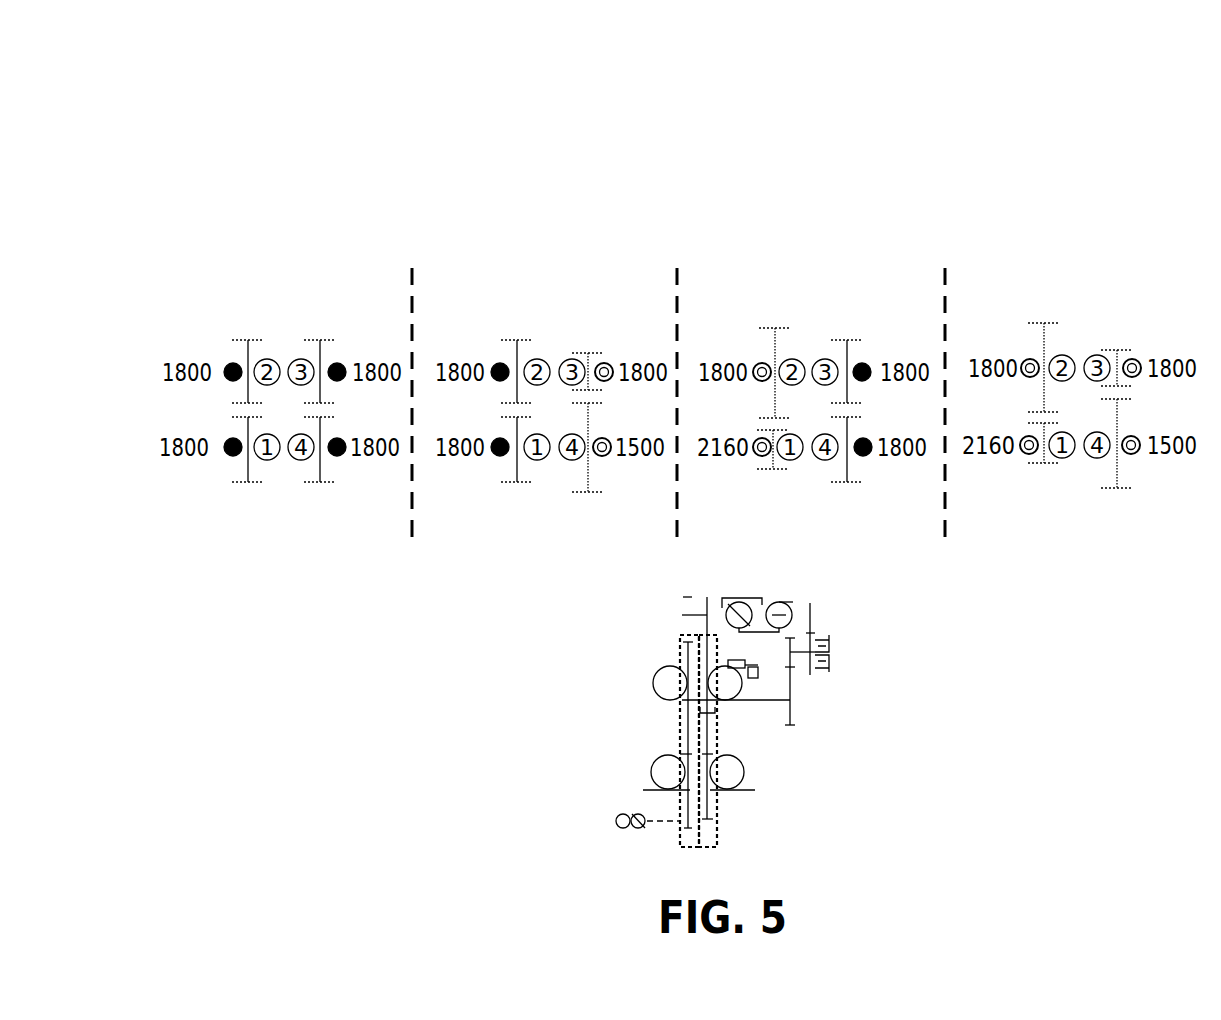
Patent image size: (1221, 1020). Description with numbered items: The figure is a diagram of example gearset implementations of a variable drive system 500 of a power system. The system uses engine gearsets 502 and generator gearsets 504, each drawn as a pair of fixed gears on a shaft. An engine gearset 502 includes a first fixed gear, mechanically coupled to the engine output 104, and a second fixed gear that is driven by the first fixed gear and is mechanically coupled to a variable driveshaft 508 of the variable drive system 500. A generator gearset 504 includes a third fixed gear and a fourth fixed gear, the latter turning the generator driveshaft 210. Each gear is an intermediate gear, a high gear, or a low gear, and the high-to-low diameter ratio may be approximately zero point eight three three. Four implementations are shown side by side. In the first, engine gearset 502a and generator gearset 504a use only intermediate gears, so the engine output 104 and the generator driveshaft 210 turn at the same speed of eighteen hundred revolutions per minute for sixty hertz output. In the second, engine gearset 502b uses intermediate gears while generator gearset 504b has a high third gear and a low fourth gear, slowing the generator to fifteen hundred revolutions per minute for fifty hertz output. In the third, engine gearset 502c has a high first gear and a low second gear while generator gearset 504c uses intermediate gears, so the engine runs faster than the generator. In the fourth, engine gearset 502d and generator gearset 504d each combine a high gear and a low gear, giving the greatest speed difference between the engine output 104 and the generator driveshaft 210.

The variable drive system 500 is at (205, 38).
The engine gearset 502 is at (681, 847).
The generator gearset 504 is at (717, 847).
The engine gearset 502a is at (244, 430).
The generator gearset 504a is at (323, 430).
The engine gearset 502b is at (509, 434).
The generator gearset 504b is at (589, 440).
The engine gearset 502c is at (774, 428).
The generator gearset 504c is at (854, 434).
The engine gearset 502d is at (1044, 424).
The generator gearset 504d is at (1124, 437).
The variable driveshaft 508 is at (688, 701).
The engine output 104 is at (650, 790).
The generator driveshaft 210 is at (752, 790).